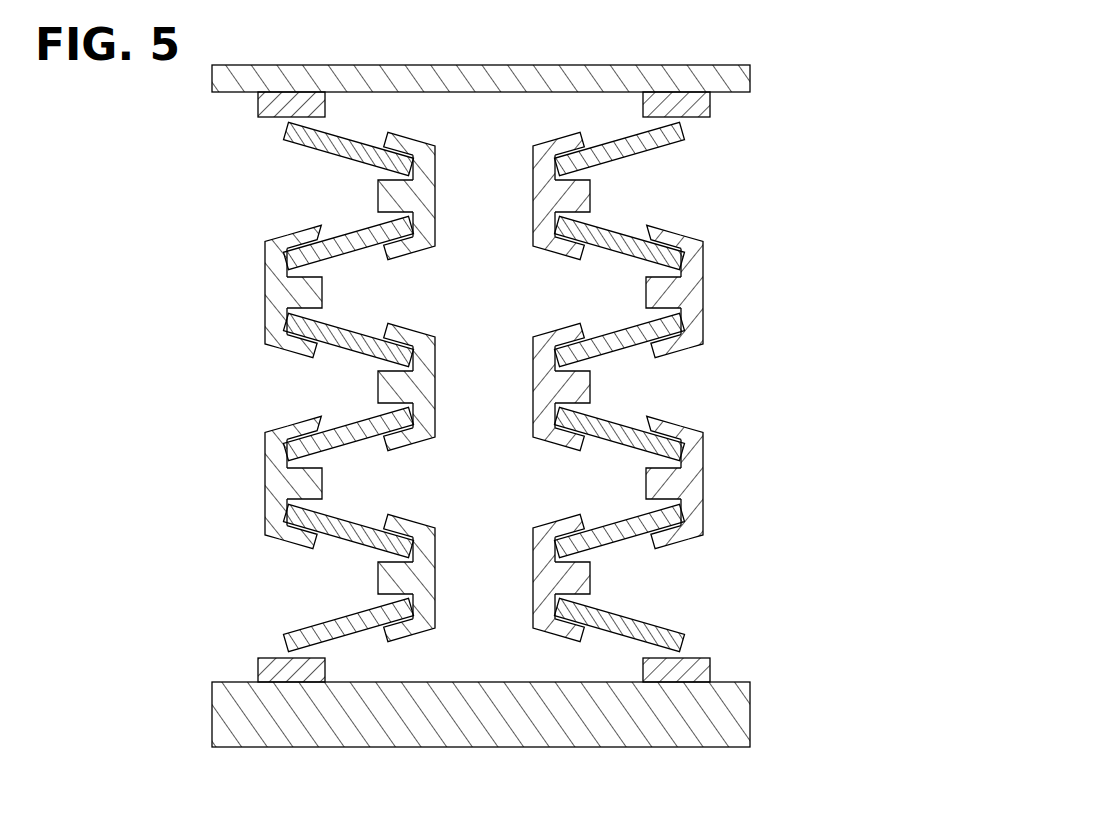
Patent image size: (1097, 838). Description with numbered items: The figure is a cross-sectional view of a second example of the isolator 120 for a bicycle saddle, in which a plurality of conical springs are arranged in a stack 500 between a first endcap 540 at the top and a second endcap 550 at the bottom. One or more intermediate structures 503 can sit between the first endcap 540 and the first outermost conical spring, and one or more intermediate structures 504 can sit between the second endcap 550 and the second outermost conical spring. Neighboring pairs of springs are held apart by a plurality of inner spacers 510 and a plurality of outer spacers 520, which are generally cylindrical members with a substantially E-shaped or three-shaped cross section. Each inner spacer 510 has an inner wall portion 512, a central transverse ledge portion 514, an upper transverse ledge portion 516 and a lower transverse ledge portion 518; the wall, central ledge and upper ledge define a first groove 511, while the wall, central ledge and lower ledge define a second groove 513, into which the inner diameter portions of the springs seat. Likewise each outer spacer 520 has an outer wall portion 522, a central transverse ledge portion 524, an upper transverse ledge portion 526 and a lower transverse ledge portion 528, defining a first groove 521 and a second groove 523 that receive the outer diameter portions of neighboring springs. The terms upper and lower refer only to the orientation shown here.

The isolator 120 is at (552, 48).
The stack 500 is at (537, 373).
The intermediate structures 503 is at (258, 104).
The intermediate structures 504 is at (258, 658).
The inner spacers 510 is at (440, 244).
The first groove 511 is at (592, 174).
The inner wall portion 512 is at (436, 190).
The second groove 513 is at (592, 220).
The central transverse ledge portion 514 is at (378, 192).
The upper transverse ledge portion 516 is at (414, 137).
The lower transverse ledge portion 518 is at (400, 252).
The outer spacers 520 is at (262, 243).
The first groove 521 is at (641, 270).
The outer wall portion 522 is at (272, 292).
The second groove 523 is at (641, 315).
The central transverse ledge portion 524 is at (308, 291).
The upper transverse ledge portion 526 is at (300, 236).
The lower transverse ledge portion 528 is at (290, 344).
The first endcap 540 is at (748, 72).
The second endcap 550 is at (742, 702).